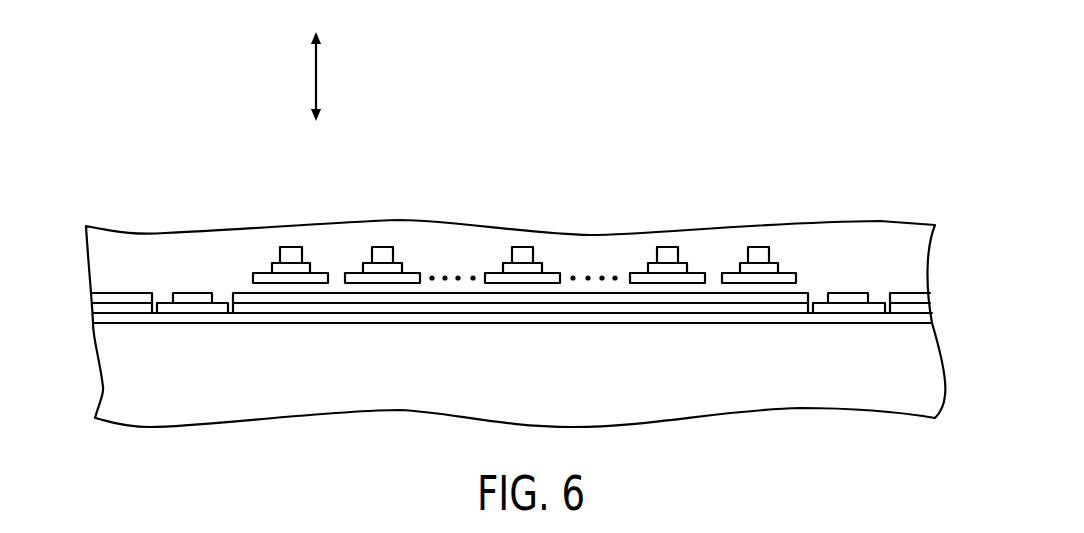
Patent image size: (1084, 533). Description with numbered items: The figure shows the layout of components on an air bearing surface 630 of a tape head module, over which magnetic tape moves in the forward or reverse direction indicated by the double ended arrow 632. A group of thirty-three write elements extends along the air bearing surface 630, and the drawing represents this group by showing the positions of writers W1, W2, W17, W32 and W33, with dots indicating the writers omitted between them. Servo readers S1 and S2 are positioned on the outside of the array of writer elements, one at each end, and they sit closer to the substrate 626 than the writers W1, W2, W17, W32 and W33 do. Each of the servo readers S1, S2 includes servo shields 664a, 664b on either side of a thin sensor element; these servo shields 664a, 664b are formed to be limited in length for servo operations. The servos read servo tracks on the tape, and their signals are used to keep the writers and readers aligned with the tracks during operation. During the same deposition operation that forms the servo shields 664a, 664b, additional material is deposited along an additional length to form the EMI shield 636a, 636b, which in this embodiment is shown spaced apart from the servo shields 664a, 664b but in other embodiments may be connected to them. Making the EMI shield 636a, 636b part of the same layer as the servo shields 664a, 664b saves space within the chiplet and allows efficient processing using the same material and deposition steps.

The substrate 626 is at (470, 384).
The air bearing surface 630 is at (499, 348).
The double ended arrow 632 is at (316, 78).
The EMI shield 636a is at (637, 314).
The EMI shield 636b is at (610, 300).
The servo shield 664a is at (880, 308).
The servo shield 664b is at (862, 300).
The servo reader S1 is at (863, 207).
The servo reader S2 is at (192, 293).
The writer W1 is at (759, 247).
The writer W2 is at (670, 247).
The writer W17 is at (523, 247).
The writer W32 is at (382, 247).
The writer W33 is at (291, 247).